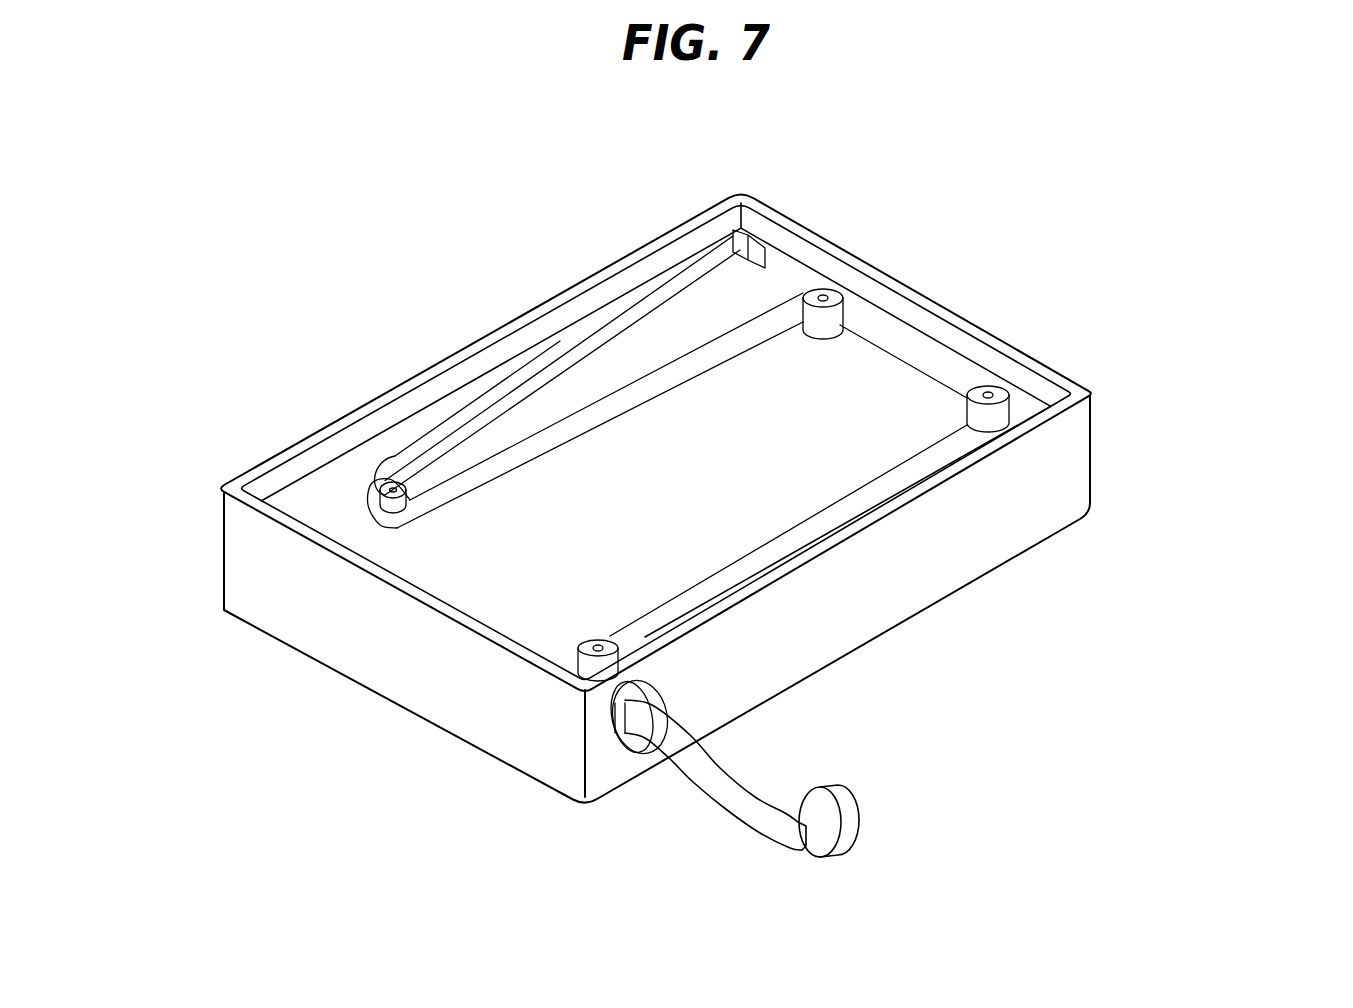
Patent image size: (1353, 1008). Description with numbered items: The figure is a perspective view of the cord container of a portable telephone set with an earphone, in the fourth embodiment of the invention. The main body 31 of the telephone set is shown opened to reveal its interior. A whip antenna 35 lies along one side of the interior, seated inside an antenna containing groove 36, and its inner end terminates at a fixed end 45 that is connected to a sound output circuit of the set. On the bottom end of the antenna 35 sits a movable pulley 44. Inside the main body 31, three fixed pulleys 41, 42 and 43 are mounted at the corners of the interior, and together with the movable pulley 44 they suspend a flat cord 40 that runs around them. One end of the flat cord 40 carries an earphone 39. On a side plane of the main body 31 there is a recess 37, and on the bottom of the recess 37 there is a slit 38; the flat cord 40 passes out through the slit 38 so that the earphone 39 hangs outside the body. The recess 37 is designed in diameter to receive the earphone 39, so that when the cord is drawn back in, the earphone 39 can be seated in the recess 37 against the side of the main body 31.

The main body 31 is at (1063, 473).
The whip antenna 35 is at (760, 282).
The antenna containing groove 36 is at (803, 290).
The recess 37 is at (617, 698).
The slit 38 is at (616, 745).
The earphone 39 is at (859, 830).
The flat cord 40 is at (717, 763).
The fixed pulley 41 is at (637, 630).
The fixed pulley 42 is at (990, 387).
The fixed pulley 43 is at (833, 295).
The movable pulley 44 is at (373, 492).
The fixed end 45 is at (733, 233).